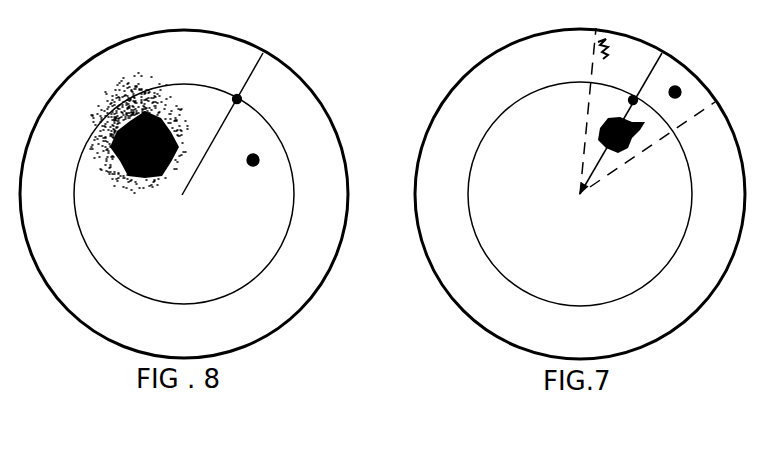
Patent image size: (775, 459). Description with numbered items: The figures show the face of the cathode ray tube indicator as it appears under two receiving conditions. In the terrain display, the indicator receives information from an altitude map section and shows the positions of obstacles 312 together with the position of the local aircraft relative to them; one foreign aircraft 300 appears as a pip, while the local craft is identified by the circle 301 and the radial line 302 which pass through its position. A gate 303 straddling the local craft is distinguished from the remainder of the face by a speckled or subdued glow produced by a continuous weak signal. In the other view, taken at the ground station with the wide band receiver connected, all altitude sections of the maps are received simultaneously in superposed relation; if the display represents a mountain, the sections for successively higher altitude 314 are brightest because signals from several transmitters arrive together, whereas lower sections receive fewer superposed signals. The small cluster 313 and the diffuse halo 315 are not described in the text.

In FIG. 8, the pip 300 is at (239, 105).
In FIG. 7, the pip 300 is at (683, 90).
In FIG. 8, the circle 301 is at (291, 214).
In FIG. 7, the circle 301 is at (673, 258).
In FIG. 8, the radial line 302 is at (249, 81).
In FIG. 7, the radial line 302 is at (657, 67).
In FIG. 7, the gate 303 is at (670, 123).
In FIG. 7, the obstacle 312 is at (627, 152).
In FIG. 7, the small particle cluster 313 is at (608, 45).
In FIG. 8, the higher altitude section 314 is at (150, 175).
In FIG. 8, the diffuse halo of particles 315 is at (127, 86).